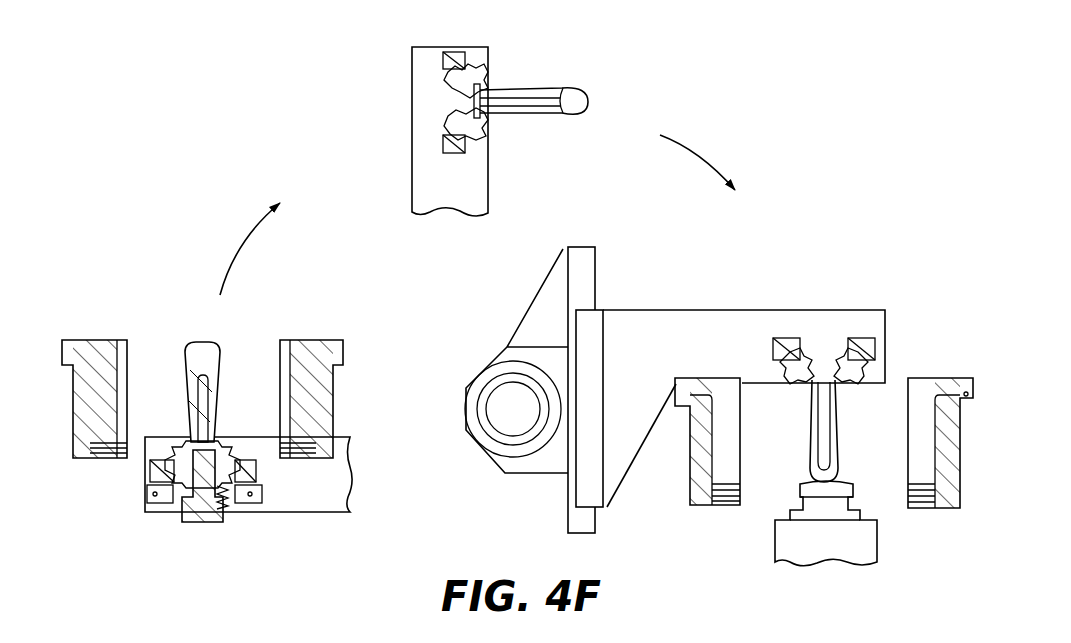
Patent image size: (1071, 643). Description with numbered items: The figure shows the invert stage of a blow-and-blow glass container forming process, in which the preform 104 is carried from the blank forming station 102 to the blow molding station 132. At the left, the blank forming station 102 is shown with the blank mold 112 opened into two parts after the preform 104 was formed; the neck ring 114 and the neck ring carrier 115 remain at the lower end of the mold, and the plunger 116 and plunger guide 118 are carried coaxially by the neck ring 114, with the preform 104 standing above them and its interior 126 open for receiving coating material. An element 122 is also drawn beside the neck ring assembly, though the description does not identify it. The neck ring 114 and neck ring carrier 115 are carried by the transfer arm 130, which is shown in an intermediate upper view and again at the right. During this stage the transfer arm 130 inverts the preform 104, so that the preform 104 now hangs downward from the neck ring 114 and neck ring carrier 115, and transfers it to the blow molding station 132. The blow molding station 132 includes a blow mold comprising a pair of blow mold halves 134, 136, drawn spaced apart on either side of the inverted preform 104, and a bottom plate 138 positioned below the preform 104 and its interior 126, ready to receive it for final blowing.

The blank forming station 102 is at (178, 242).
The preform 104 is at (215, 358).
The blank mold 112 is at (88, 339).
The neck ring 114 is at (195, 446).
The neck ring carrier 115 is at (155, 476).
The plunger 116 is at (201, 522).
The plunger guide 118 is at (178, 510).
The block 122 is at (262, 493).
The interior 126 is at (209, 400).
The transfer arm 130 is at (285, 512).
The blow molding station 132 is at (872, 265).
The blow mold half 134 is at (699, 379).
The blow mold half 136 is at (934, 380).
The bottom plate 138 is at (800, 488).